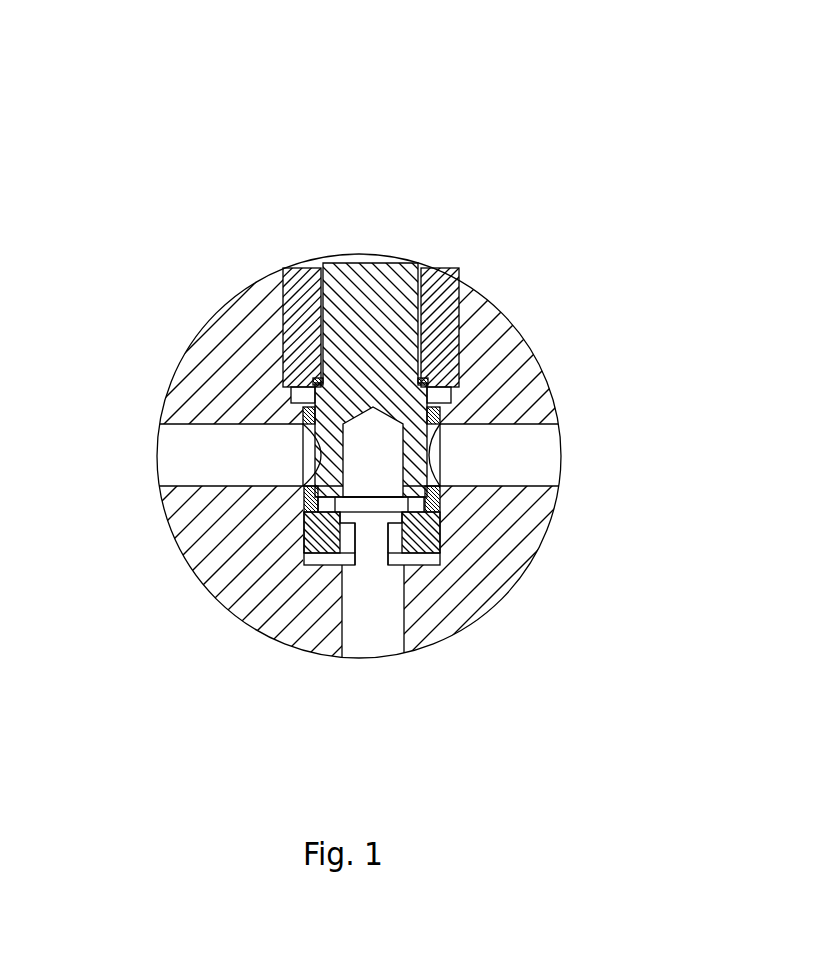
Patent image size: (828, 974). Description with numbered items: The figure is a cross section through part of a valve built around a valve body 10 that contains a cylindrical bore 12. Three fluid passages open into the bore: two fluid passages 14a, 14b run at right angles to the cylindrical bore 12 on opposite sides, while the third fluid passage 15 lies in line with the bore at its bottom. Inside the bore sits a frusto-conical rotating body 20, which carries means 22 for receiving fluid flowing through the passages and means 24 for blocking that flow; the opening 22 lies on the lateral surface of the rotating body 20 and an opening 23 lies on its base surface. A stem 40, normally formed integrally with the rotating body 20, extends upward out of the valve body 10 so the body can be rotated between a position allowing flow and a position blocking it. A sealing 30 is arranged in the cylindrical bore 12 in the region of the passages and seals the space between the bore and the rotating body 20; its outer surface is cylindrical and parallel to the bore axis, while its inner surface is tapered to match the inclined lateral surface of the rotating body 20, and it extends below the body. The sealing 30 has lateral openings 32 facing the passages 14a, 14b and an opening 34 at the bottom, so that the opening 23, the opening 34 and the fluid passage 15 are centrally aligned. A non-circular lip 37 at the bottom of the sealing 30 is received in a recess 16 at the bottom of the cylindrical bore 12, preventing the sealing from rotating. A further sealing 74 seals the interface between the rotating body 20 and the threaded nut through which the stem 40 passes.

The valve body 10 is at (502, 372).
The cylindrical bore 12 is at (339, 210).
The fluid passage 14a is at (203, 458).
The fluid passage 14b is at (538, 457).
The fluid passage 15 is at (377, 640).
The recess 16 is at (447, 555).
The rotating body 20 is at (333, 402).
The opening 22 is at (358, 505).
The opening 23 is at (332, 450).
The means for blocking fluid 24 is at (434, 455).
The sealing 30 is at (438, 516).
The opening 32 is at (313, 472).
The opening 34 is at (373, 548).
The lip 37 is at (305, 540).
The stem 40 is at (380, 293).
The sealing 74 is at (315, 380).